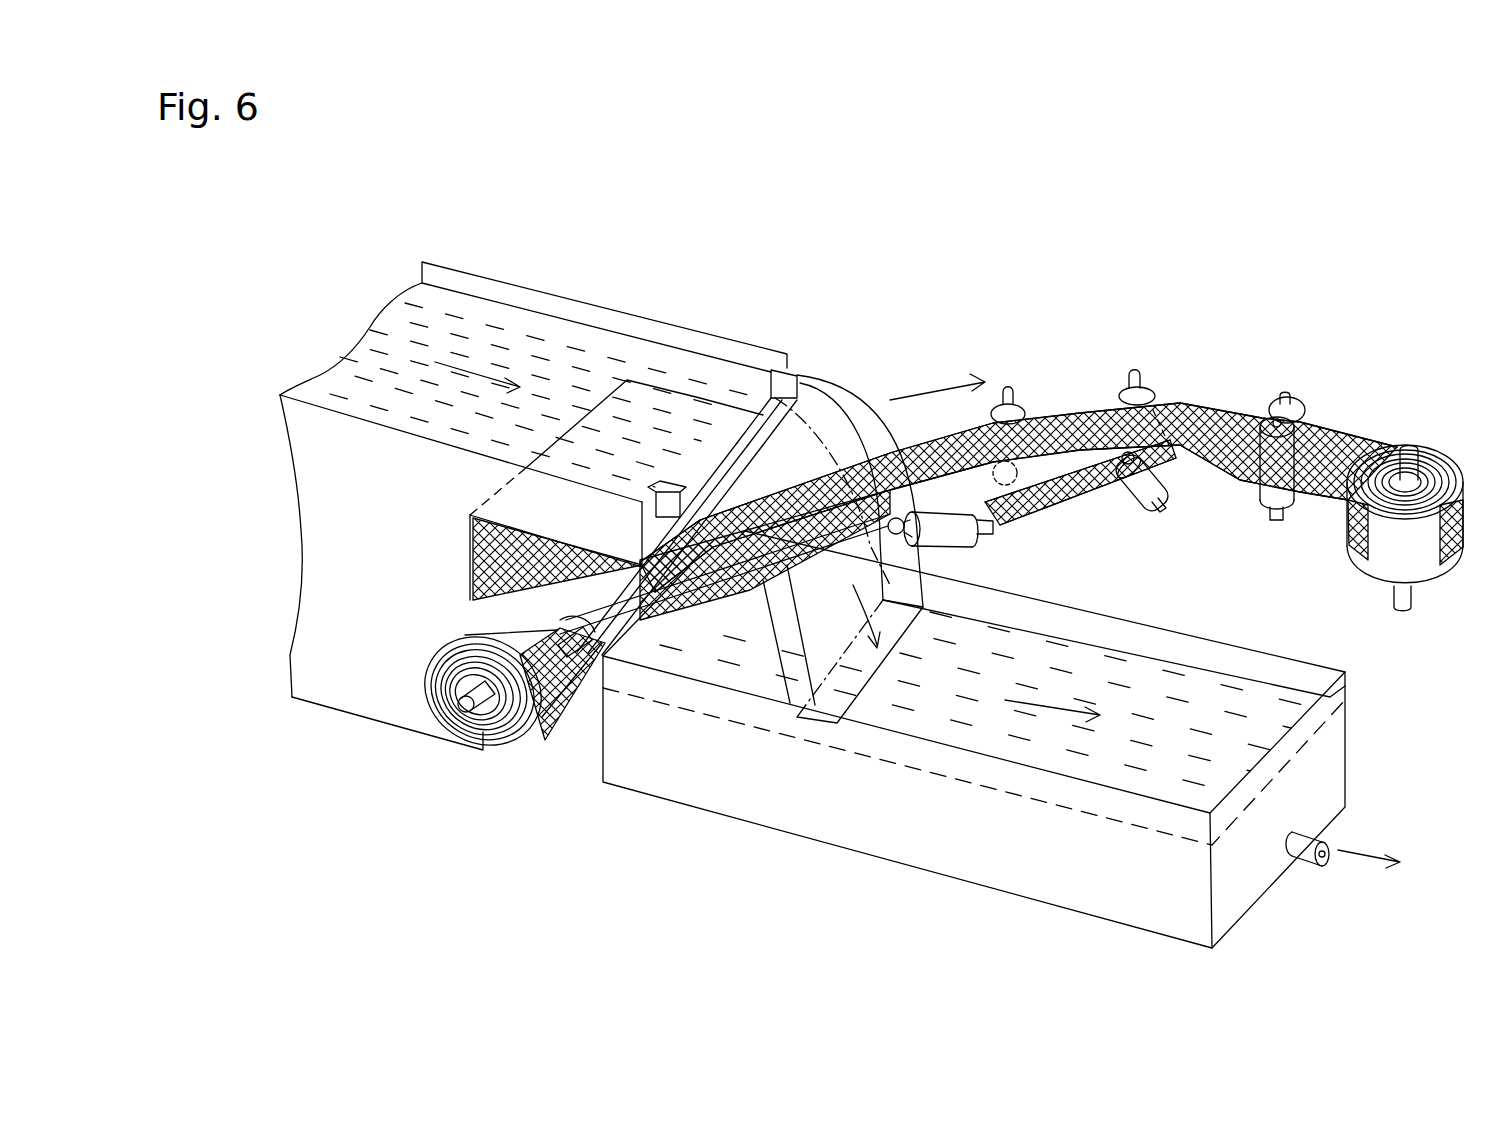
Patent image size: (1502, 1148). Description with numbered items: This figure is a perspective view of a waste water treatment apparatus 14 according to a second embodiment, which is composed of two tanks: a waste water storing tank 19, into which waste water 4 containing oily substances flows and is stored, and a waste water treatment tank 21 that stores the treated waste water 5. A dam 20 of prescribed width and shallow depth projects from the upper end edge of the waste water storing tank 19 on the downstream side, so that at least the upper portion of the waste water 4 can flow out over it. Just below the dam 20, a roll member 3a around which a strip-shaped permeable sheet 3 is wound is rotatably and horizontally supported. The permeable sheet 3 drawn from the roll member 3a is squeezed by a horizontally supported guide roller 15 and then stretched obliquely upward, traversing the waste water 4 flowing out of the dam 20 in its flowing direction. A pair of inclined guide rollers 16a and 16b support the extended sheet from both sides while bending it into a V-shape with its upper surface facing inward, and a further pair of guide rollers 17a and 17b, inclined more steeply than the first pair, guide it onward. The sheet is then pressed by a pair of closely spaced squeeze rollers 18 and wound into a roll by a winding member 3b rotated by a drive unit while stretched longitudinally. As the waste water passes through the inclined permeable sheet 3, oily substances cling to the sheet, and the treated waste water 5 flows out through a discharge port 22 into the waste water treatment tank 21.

The permeable sheet 3 is at (1070, 422).
The roll member 3a is at (541, 730).
The winding member 3b is at (1448, 455).
The waste water 4 is at (390, 348).
The treated waste water 5 is at (1193, 697).
The waste water treatment apparatus 14 is at (910, 349).
The guide roller 15 is at (600, 620).
The guide roller 16a is at (993, 405).
The guide roller 16b is at (980, 530).
The guide roller 17a is at (1152, 391).
The guide roller 17b is at (1142, 493).
The squeeze rollers 18 is at (1330, 410).
The waste water storing tank 19 is at (565, 304).
The dam 20 is at (765, 405).
The waste water treatment tank 21 is at (918, 820).
The discharge port 22 is at (1307, 845).